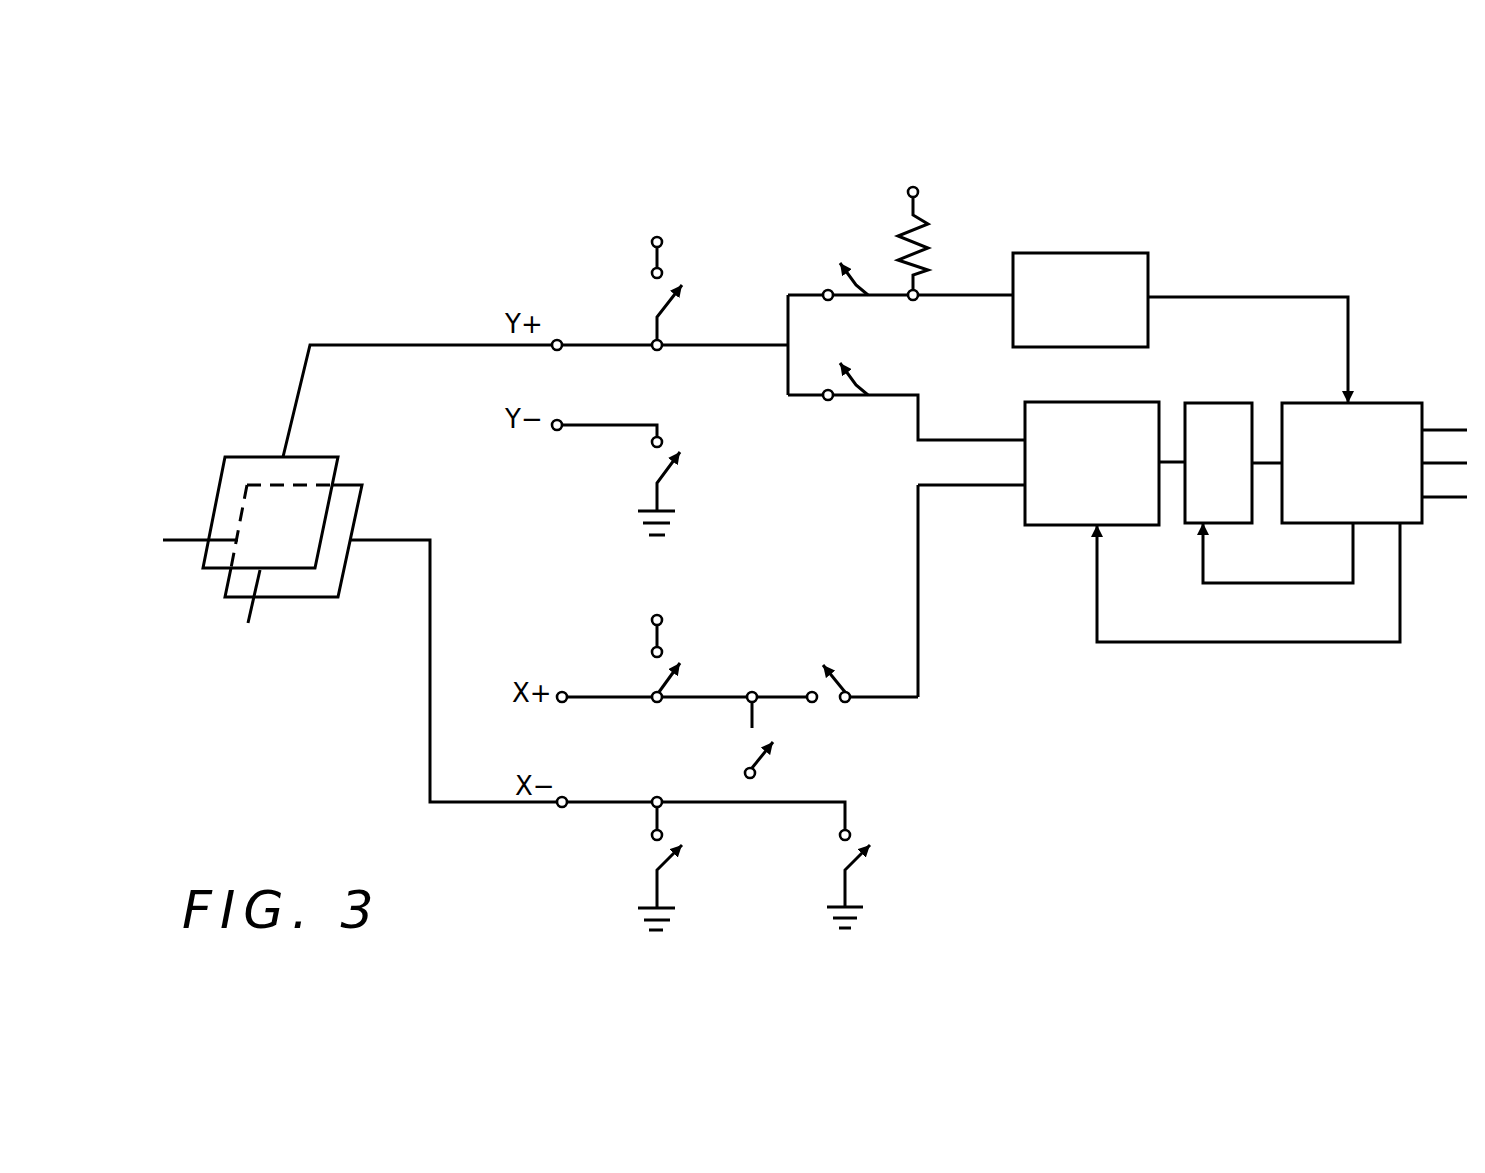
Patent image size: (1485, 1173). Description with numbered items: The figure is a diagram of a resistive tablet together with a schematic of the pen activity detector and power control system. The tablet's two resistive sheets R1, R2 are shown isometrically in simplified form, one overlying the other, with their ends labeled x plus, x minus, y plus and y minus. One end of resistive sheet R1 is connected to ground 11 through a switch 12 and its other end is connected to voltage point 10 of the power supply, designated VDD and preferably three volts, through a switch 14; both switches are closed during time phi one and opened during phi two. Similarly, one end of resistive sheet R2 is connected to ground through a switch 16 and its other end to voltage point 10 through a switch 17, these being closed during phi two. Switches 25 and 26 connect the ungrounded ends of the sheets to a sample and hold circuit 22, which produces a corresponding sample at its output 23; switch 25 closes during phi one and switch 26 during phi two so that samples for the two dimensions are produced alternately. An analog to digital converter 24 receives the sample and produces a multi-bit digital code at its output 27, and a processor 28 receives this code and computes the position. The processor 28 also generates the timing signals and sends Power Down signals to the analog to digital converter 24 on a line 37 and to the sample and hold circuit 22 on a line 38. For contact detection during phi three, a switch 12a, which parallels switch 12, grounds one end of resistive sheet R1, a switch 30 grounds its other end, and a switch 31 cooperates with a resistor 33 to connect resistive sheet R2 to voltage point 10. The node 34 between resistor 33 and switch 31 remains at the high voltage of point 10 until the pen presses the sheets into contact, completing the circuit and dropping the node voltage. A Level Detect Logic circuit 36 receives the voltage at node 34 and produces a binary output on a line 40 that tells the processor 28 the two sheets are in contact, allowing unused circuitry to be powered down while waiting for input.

The voltage point 10 is at (907, 192).
The resistor 33 is at (930, 240).
The node 34 is at (918, 302).
The switch 31 is at (852, 287).
The switch 25 is at (852, 386).
The Level Detect Logic circuit 36 is at (1020, 328).
The line 40 is at (1203, 296).
The analog to digital converter 24 is at (1222, 403).
The output 27 is at (1265, 460).
The processor 28 is at (1412, 518).
The output 23 is at (1168, 470).
The sample and hold circuit 22 is at (1032, 512).
The line 37 is at (1340, 585).
The line 38 is at (1402, 640).
The switch 17 is at (668, 303).
The switch 16 is at (660, 478).
The ground 11 is at (657, 496).
The switch 14 is at (668, 679).
The switch 30 is at (760, 758).
The switch 26 is at (832, 685).
The switch 12 is at (667, 862).
The switch 12a is at (857, 861).
The resistive sheet R1 is at (350, 493).
The resistive sheet R2 is at (310, 460).